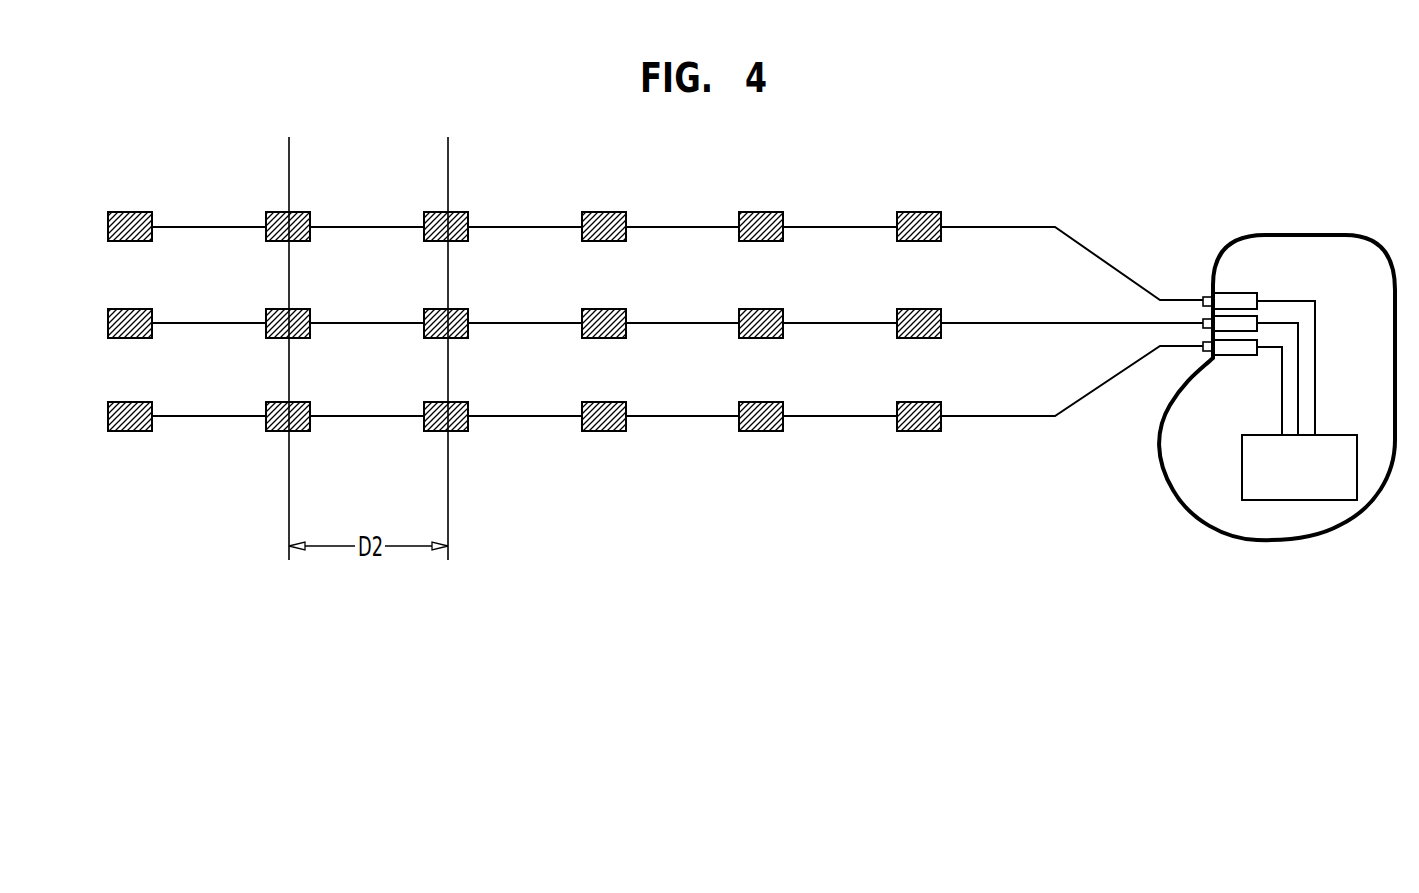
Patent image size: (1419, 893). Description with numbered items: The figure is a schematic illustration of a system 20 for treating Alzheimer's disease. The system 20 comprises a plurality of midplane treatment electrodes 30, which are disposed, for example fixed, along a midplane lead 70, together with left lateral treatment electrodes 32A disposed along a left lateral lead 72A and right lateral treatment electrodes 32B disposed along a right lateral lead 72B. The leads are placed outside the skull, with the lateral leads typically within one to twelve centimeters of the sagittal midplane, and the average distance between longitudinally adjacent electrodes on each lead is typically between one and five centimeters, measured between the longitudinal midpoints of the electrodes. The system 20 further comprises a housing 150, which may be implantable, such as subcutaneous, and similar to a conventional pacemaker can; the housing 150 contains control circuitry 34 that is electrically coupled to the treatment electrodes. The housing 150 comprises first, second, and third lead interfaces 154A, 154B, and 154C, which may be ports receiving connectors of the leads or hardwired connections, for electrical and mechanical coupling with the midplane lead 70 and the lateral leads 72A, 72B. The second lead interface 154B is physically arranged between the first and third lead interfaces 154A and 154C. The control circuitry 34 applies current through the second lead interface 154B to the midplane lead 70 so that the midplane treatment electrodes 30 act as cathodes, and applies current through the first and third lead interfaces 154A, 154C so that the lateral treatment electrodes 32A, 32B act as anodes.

The system 20 is at (1157, 223).
The midplane treatment electrodes 30 is at (600, 338).
The left lateral treatment electrodes 32A is at (280, 432).
The right lateral treatment electrodes 32B is at (301, 212).
The control circuitry 34 is at (1242, 464).
The midplane lead 70 is at (668, 322).
The left lateral lead 72A is at (368, 418).
The right lateral lead 72B is at (518, 227).
The housing 150 is at (1158, 468).
The first lead interface 154A is at (1238, 352).
The second lead interface 154B is at (1242, 323).
The third lead interface 154C is at (1236, 301).